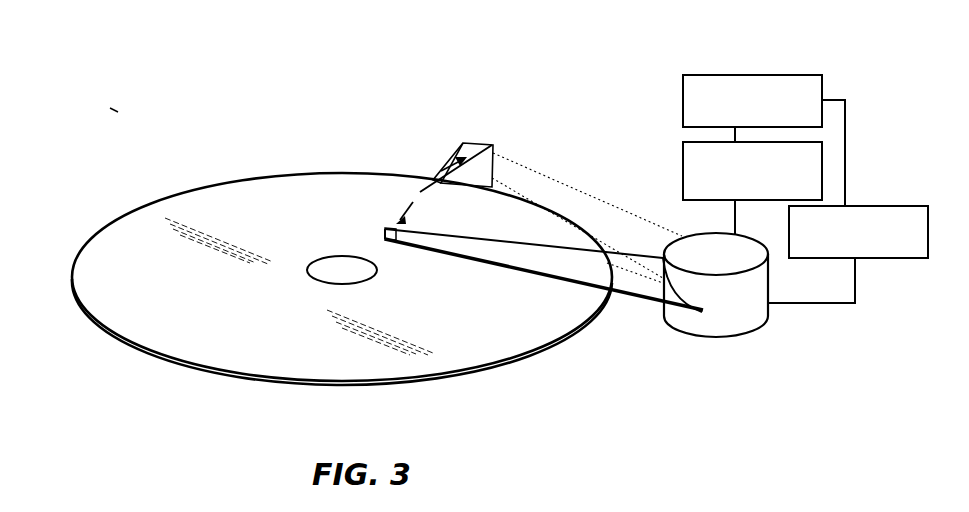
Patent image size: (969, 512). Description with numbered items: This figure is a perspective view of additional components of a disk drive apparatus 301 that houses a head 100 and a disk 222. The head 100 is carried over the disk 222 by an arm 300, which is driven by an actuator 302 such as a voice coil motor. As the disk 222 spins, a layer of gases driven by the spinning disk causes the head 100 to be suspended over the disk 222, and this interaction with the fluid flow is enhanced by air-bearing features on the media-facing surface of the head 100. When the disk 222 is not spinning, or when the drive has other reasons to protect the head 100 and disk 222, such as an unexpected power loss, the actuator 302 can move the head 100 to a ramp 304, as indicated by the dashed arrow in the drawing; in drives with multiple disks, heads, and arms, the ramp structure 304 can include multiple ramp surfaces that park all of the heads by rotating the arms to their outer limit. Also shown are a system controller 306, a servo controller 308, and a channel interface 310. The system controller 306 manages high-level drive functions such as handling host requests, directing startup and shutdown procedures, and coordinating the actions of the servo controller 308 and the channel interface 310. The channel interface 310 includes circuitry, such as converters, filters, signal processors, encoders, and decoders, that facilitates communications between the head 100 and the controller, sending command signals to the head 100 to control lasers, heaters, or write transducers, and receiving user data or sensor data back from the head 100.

The disk drive apparatus 301 is at (120, 113).
The disk 222 is at (207, 197).
The head 100 is at (384, 232).
The ramp 304 is at (463, 142).
The arm 300 is at (608, 294).
The actuator 302 is at (737, 326).
The system controller 306 is at (725, 75).
The servo controller 308 is at (897, 206).
The channel interface 310 is at (683, 163).